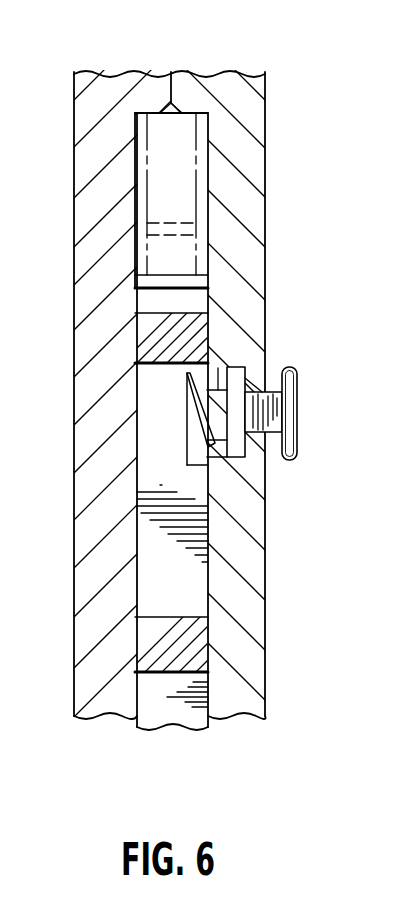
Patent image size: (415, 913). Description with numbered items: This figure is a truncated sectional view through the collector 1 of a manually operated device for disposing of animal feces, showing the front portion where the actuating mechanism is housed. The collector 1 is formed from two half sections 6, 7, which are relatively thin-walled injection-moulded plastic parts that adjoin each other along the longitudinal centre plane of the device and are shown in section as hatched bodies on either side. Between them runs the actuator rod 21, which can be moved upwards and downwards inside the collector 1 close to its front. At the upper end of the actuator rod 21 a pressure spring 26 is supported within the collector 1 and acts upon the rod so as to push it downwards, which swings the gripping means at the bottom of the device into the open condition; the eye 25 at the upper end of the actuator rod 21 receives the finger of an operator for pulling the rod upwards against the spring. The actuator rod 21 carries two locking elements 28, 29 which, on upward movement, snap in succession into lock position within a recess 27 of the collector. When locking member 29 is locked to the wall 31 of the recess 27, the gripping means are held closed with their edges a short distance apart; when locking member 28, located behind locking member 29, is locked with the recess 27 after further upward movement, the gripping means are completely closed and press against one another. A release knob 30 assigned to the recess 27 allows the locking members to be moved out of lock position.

The collector 1 is at (228, 62).
The half section 6 is at (73, 166).
The half section 7 is at (267, 158).
The actuator rod 21 is at (195, 580).
The eye 25 is at (153, 680).
The pressure spring 26 is at (147, 198).
The recess 27 is at (221, 413).
The locking element 28 is at (212, 434).
The locking element 29 is at (215, 371).
The release knob 30 is at (288, 367).
The wall 31 is at (210, 457).